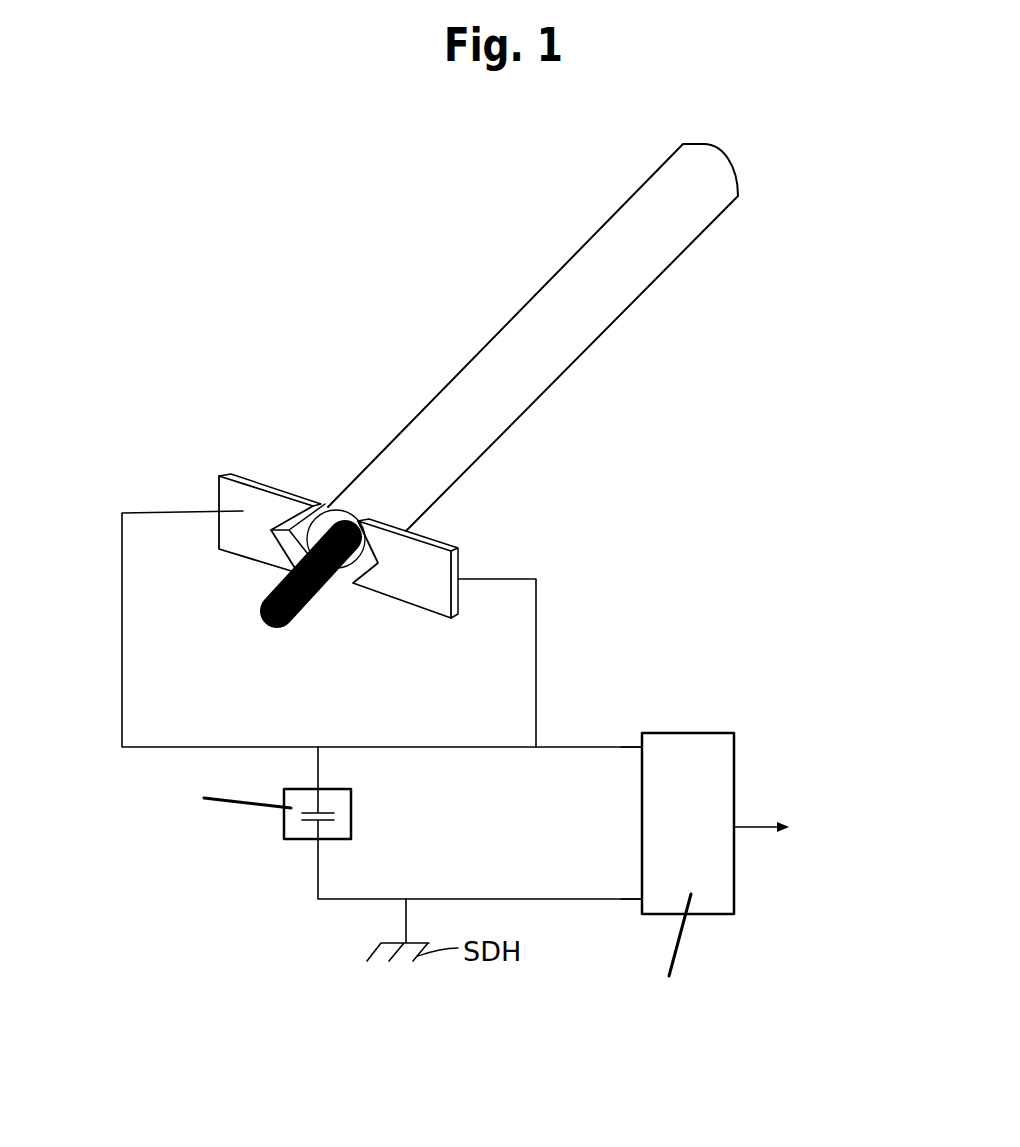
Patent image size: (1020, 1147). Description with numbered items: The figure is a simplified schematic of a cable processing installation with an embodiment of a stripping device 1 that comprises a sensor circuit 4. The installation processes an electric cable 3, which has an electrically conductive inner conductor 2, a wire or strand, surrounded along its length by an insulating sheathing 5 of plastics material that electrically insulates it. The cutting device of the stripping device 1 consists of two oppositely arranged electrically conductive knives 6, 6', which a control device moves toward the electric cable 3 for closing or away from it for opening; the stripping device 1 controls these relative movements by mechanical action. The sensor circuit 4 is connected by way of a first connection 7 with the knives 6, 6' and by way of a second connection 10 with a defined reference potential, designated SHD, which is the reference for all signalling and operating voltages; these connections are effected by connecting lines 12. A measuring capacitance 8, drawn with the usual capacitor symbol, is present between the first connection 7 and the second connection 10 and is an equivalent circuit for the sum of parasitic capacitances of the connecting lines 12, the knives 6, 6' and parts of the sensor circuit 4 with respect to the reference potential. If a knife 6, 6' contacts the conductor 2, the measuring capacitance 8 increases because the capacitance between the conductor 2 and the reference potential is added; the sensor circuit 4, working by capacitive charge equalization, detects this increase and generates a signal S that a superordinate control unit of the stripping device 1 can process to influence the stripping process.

The stripping device 1 is at (690, 446).
The conductor 2 is at (265, 608).
The electric cable 3 is at (647, 262).
The sensor circuit 4 is at (705, 732).
The insulating sheathing 5 is at (331, 518).
The knife 6 is at (186, 503).
The knife 6' is at (474, 543).
The first connection 7 is at (638, 746).
The measuring capacitance 8 is at (300, 840).
The second connection 10 is at (640, 899).
The connecting lines 12 is at (536, 667).